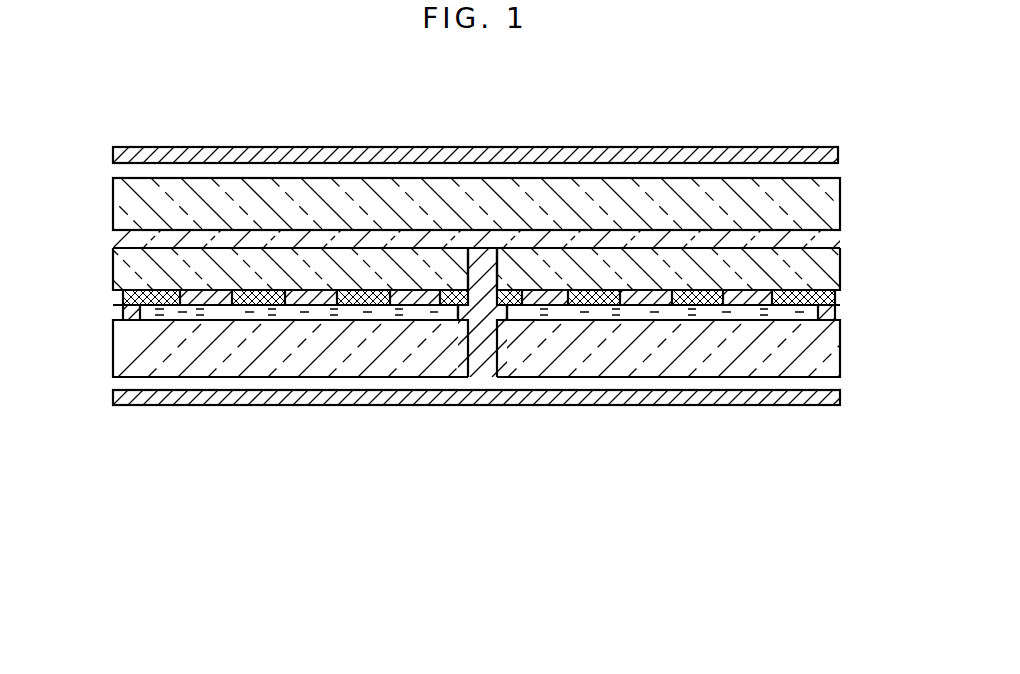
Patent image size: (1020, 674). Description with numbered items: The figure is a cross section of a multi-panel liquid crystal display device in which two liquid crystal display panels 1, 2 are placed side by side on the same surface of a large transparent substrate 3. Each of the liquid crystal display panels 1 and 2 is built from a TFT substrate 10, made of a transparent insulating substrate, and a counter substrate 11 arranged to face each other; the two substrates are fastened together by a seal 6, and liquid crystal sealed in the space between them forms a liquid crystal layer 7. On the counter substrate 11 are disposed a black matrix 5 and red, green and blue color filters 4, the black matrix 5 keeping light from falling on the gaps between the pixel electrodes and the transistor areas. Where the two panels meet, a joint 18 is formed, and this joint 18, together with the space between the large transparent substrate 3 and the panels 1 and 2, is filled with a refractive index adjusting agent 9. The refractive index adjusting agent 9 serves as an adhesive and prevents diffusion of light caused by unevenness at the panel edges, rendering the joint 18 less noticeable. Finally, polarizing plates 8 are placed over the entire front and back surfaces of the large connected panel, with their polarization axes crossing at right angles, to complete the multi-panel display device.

The liquid crystal display panel 1 is at (47, 463).
The liquid crystal display panel 2 is at (907, 465).
The large transparent substrate 3 is at (115, 195).
The RGB color filters 4 is at (235, 301).
The black matrix 5 is at (168, 306).
The seal 6 is at (135, 306).
The liquid crystal layer 7 is at (372, 313).
The polarizing plates 8 is at (841, 152).
The refractive index adjusting agent 9 is at (487, 357).
The TFT substrate 10 is at (155, 350).
The counter substrate 11 is at (113, 284).
The joint 18 is at (483, 242).